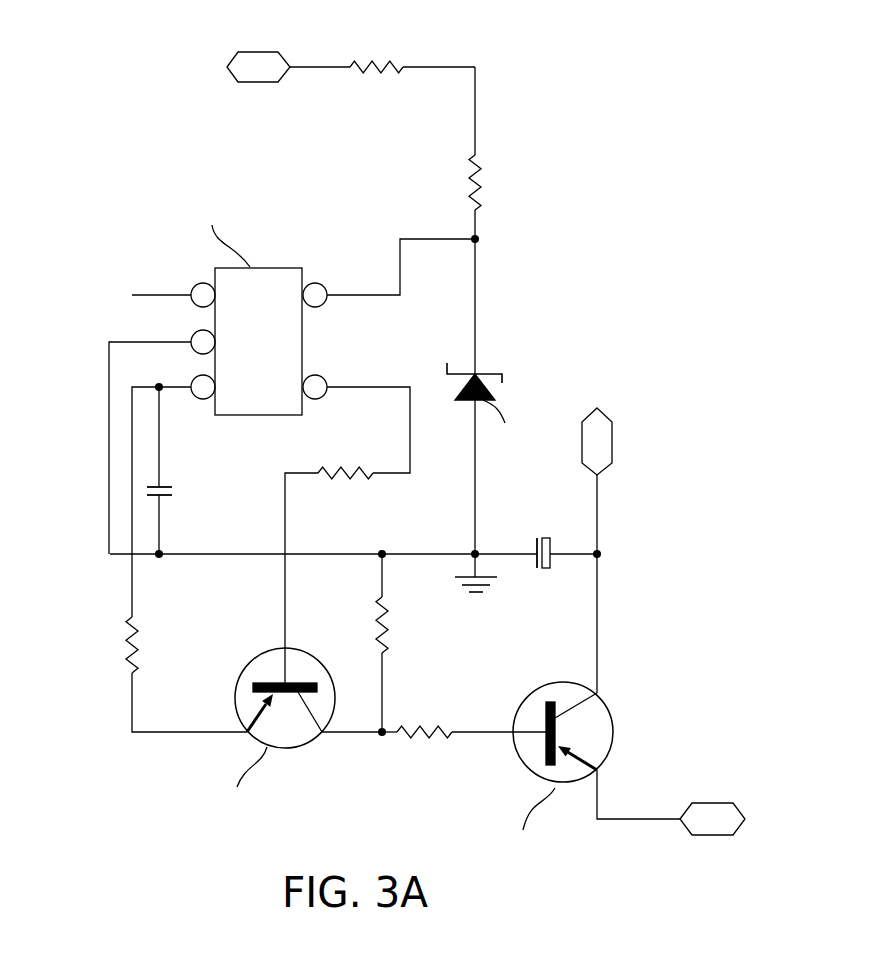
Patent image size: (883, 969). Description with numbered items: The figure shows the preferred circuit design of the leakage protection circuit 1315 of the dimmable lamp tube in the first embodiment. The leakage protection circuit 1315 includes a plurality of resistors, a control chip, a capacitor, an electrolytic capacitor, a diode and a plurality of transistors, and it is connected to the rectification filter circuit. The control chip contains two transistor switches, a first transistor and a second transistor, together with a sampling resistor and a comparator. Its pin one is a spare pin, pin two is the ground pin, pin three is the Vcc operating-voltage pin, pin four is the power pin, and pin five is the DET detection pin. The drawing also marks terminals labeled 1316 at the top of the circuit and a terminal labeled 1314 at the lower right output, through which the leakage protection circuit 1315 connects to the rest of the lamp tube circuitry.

The 5V output terminal 1314 is at (745, 819).
The leakage protection circuit 1315 is at (146, 237).
The signal terminal 1316 is at (227, 67).